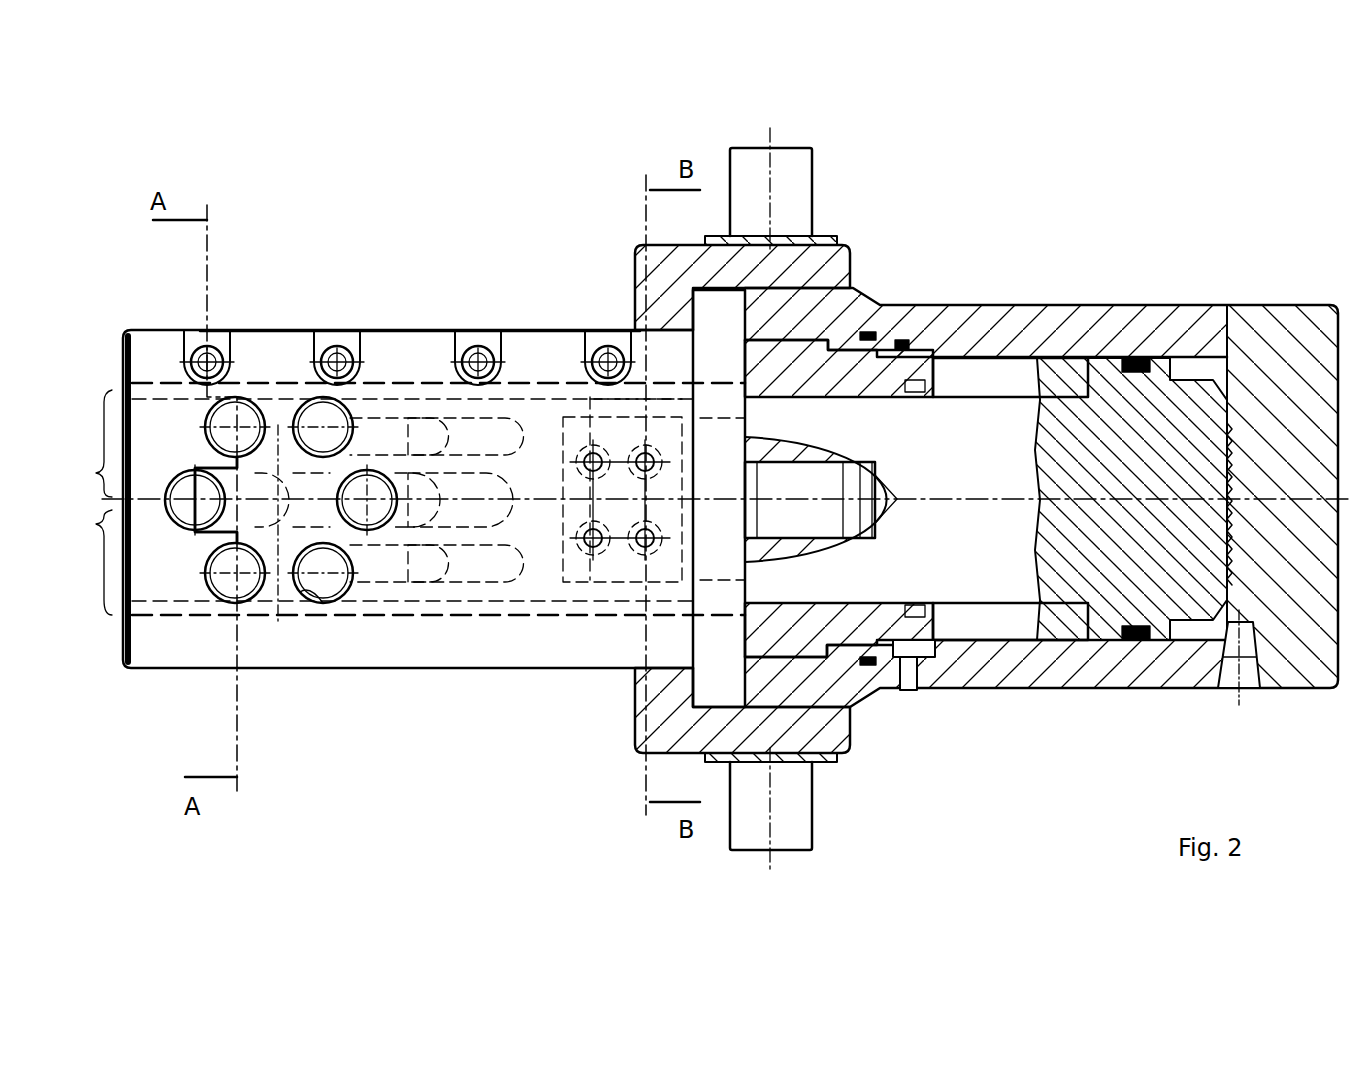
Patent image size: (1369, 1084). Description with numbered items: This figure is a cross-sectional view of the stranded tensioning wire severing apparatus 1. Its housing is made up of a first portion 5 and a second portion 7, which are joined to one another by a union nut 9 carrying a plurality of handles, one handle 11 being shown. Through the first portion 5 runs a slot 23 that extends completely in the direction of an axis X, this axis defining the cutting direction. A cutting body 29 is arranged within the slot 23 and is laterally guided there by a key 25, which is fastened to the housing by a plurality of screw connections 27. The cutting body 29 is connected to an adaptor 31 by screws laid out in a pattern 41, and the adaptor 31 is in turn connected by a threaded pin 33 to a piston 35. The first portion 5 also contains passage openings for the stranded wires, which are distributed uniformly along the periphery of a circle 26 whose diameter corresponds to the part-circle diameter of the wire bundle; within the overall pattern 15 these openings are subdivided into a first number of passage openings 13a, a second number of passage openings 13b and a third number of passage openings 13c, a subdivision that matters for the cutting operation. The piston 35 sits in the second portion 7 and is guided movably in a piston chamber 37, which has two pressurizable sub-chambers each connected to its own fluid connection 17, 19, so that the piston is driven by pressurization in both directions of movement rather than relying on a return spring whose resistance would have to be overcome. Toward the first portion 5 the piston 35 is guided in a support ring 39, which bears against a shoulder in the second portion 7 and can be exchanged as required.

The stranded tensioning wire severing apparatus 1 is at (393, 127).
The first portion of the housing 5 is at (383, 672).
The second portion of the housing 7 is at (1053, 690).
The union nut 9 is at (835, 737).
The handle 11 is at (795, 172).
The first number of passage openings 13a is at (207, 413).
The second number of passage openings 13b is at (177, 473).
The third number of passage openings 13c is at (350, 418).
The pattern 15 is at (188, 553).
The fluid connection 17 is at (1252, 705).
The fluid connection 19 is at (927, 703).
The slot 23 is at (84, 562).
The key 25 is at (278, 353).
The circle 26 is at (300, 592).
The screw connections 27 is at (228, 342).
The cutting body 29 is at (530, 540).
The adaptor 31 is at (612, 600).
The threaded pin 33 is at (925, 690).
The piston 35 is at (1103, 390).
The piston chamber 37 is at (977, 372).
The support ring 39 is at (870, 305).
The pattern 41 is at (577, 508).
The axis X is at (94, 443).